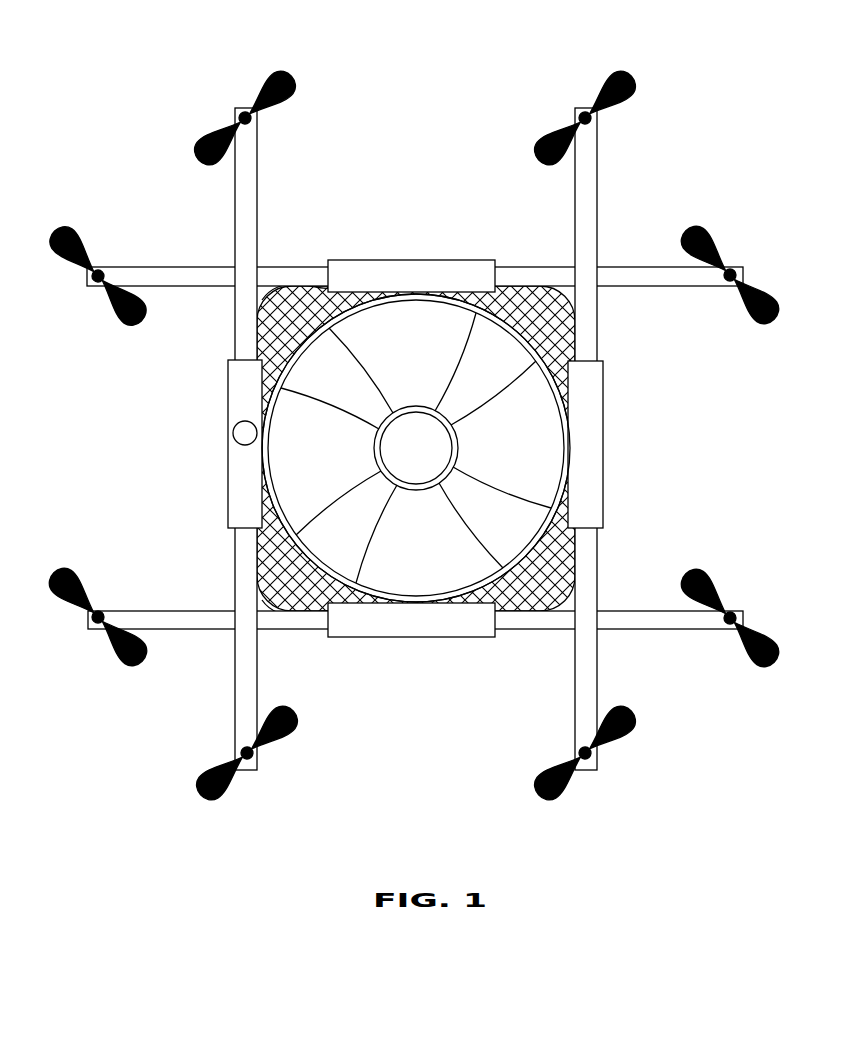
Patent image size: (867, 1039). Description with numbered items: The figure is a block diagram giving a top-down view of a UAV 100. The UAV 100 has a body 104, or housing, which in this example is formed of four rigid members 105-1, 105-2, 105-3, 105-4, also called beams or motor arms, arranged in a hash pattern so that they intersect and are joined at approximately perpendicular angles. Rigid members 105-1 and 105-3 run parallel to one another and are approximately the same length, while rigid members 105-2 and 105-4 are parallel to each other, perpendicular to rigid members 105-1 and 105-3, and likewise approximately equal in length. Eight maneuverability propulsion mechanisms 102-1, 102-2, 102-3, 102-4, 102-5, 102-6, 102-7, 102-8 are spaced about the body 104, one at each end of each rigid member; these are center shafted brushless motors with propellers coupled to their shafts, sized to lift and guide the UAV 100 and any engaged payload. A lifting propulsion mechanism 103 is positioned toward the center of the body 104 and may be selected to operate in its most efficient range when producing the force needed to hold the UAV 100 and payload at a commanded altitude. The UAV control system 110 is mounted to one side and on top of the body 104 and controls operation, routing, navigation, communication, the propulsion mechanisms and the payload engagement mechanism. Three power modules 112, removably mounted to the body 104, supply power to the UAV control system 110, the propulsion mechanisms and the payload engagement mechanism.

The UAV 100 is at (700, 68).
The maneuverability propulsion mechanism 102-1 is at (290, 94).
The maneuverability propulsion mechanism 102-2 is at (623, 98).
The maneuverability propulsion mechanism 102-3 is at (770, 318).
The maneuverability propulsion mechanism 102-4 is at (718, 584).
The maneuverability propulsion mechanism 102-5 is at (625, 733).
The maneuverability propulsion mechanism 102-6 is at (292, 728).
The maneuverability propulsion mechanism 102-7 is at (83, 578).
The maneuverability propulsion mechanism 102-8 is at (88, 242).
The lifting propulsion mechanism 103 is at (437, 345).
The body 104 is at (273, 570).
The rigid member 105-1 is at (663, 287).
The rigid member 105-2 is at (600, 232).
The rigid member 105-3 is at (637, 611).
The rigid member 105-4 is at (258, 262).
The UAV control system 110 is at (228, 389).
The power module 112 is at (432, 285).